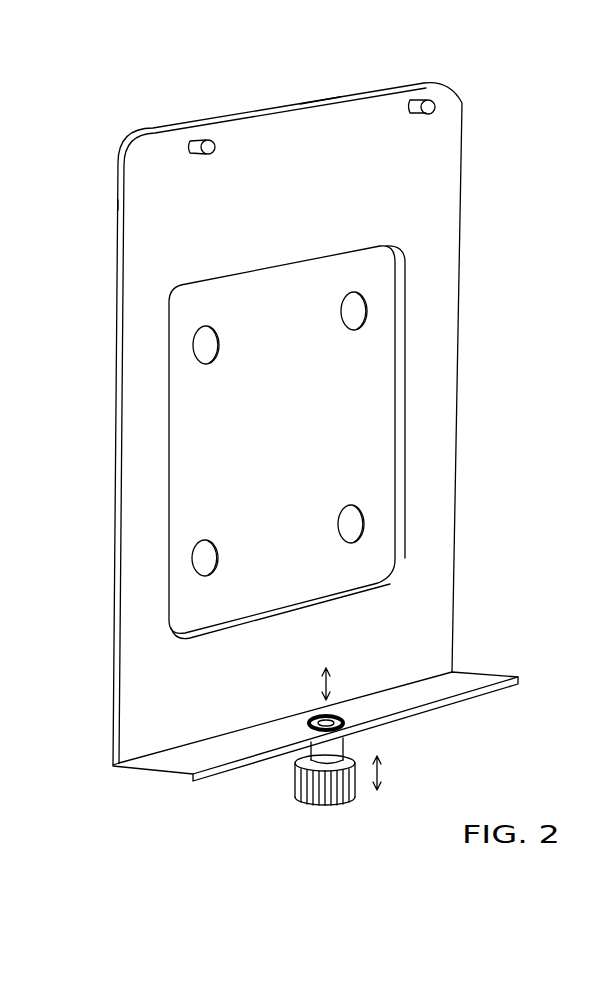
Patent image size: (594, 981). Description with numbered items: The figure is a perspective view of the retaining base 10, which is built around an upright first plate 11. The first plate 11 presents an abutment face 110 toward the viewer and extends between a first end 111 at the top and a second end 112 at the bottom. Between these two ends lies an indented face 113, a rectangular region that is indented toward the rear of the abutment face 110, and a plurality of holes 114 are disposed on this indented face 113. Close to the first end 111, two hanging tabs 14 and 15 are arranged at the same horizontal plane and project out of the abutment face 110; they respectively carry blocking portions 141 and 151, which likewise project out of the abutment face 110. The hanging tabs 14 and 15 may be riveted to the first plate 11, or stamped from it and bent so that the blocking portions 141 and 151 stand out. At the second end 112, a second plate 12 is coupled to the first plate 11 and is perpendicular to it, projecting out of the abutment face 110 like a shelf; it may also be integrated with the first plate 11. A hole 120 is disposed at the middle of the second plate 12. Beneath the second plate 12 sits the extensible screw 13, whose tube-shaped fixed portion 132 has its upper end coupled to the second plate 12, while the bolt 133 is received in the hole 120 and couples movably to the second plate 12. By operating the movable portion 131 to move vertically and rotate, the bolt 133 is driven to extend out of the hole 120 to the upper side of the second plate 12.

The retaining base 10 is at (302, 42).
The first plate 11 is at (134, 127).
The abutment face 110 is at (143, 195).
The first end 111 is at (367, 110).
The second end 112 is at (113, 768).
The indented face 113 is at (190, 462).
The holes 114 is at (203, 344).
The second plate 12 is at (160, 772).
The hole 120 is at (352, 730).
The extensible screw 13 is at (356, 804).
The movable portion 131 is at (297, 801).
The fixed portion 132 is at (320, 750).
The bolt 133 is at (340, 716).
The hanging tab 14 is at (190, 143).
The blocking portion 141 is at (208, 140).
The hanging tab 15 is at (417, 100).
The blocking portion 151 is at (435, 106).